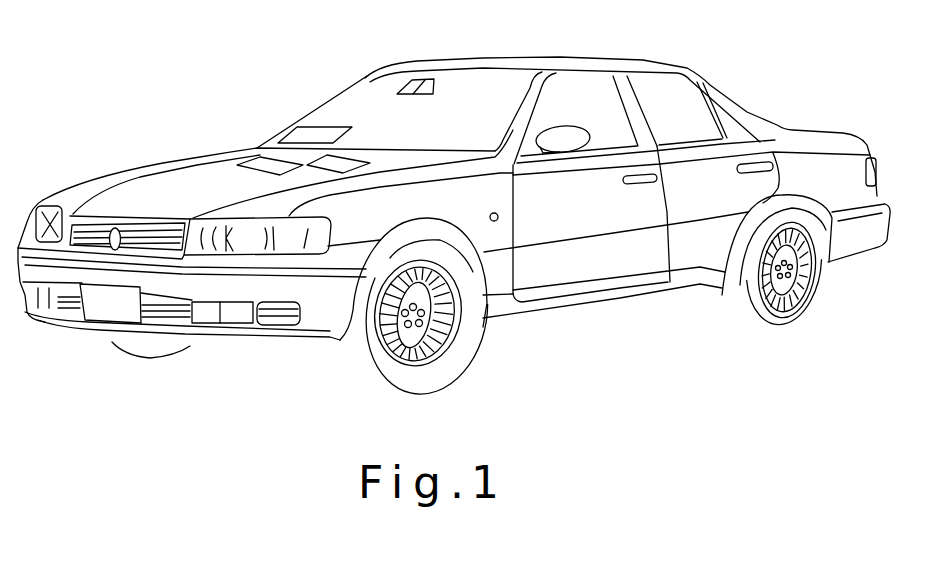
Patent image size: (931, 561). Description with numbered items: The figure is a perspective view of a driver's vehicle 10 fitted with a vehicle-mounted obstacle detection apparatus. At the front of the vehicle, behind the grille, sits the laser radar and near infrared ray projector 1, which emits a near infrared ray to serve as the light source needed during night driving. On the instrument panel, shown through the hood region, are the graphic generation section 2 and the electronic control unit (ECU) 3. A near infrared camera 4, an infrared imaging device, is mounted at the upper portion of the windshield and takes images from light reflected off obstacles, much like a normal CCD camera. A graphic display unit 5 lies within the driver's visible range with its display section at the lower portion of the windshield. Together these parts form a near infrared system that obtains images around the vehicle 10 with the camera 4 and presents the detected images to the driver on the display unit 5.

The laser radar and near infrared ray projector 1 is at (117, 236).
The graphic generation section 2 is at (247, 158).
The electronic control unit (ECU) 3 is at (357, 164).
The near infrared camera 4 is at (431, 68).
The graphic display unit 5 is at (312, 128).
The driver's vehicle 10 is at (412, 68).